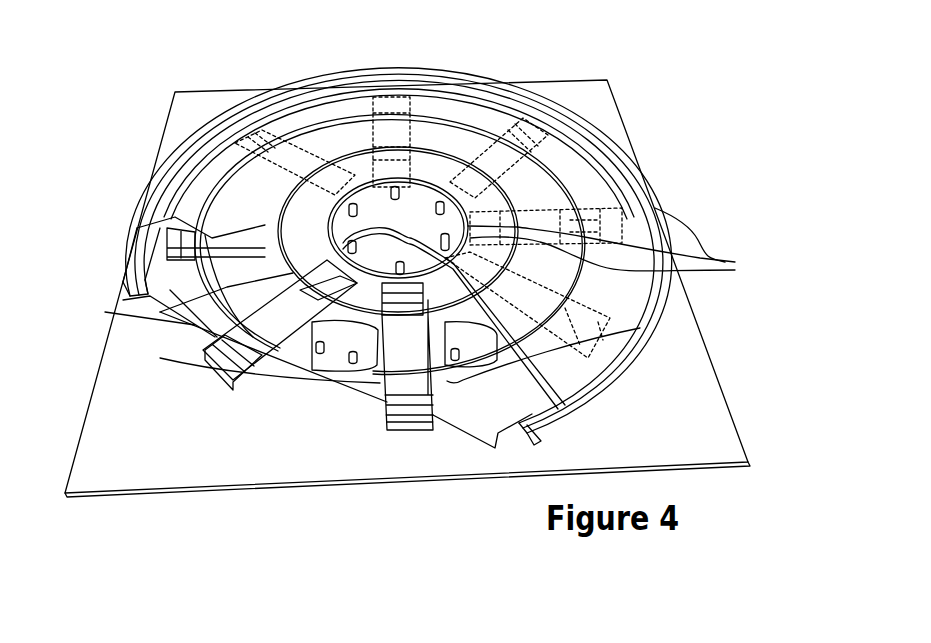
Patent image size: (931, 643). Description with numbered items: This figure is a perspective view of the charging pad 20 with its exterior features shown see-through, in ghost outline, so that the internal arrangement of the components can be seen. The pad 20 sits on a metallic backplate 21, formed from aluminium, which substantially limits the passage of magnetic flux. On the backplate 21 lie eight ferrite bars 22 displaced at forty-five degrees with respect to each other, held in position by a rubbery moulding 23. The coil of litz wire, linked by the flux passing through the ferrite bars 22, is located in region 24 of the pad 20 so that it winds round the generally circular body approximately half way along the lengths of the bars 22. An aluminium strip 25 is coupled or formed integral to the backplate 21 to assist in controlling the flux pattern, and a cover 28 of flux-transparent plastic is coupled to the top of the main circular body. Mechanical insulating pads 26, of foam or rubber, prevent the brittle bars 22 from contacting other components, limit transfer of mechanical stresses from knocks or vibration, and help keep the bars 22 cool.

The charging pad 20 is at (662, 133).
The metallic backplate 21 is at (708, 343).
The ferrite bars 22 is at (233, 378).
The rubbery moulding 23 is at (118, 312).
The region 24 is at (345, 135).
The aluminium strip 25 is at (620, 410).
The mechanical insulating pads 26 is at (58, 409).
The cover 28 is at (453, 110).